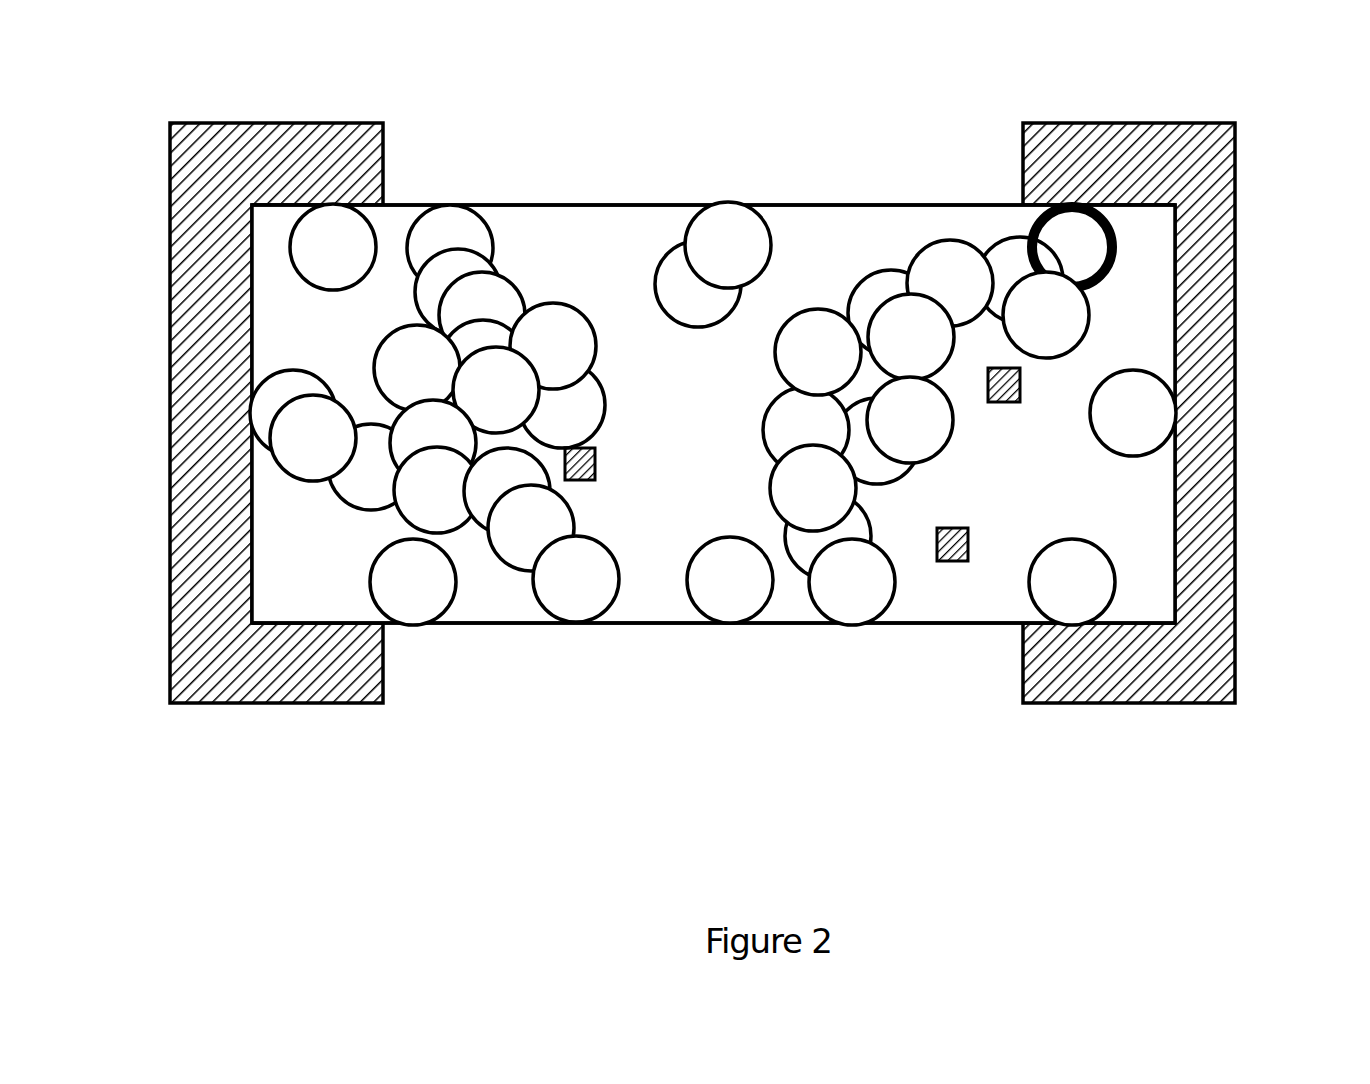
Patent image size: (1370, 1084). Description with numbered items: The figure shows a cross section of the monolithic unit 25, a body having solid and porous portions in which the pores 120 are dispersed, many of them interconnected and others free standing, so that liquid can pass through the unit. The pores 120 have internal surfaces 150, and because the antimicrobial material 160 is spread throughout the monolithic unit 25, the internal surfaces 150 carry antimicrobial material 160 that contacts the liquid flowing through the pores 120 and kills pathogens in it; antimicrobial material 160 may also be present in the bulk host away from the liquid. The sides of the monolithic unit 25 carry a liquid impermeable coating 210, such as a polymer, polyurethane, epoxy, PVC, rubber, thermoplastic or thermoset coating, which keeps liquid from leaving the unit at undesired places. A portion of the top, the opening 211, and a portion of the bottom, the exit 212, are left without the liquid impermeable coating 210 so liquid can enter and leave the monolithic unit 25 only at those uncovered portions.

The monolithic unit 25 is at (857, 245).
The pores 120 is at (779, 415).
The internal surfaces 150 is at (1120, 562).
The antimicrobial material 160 is at (1120, 250).
The liquid impermeable coating 210 is at (222, 358).
The opening 211 is at (625, 200).
The exit 212 is at (465, 628).